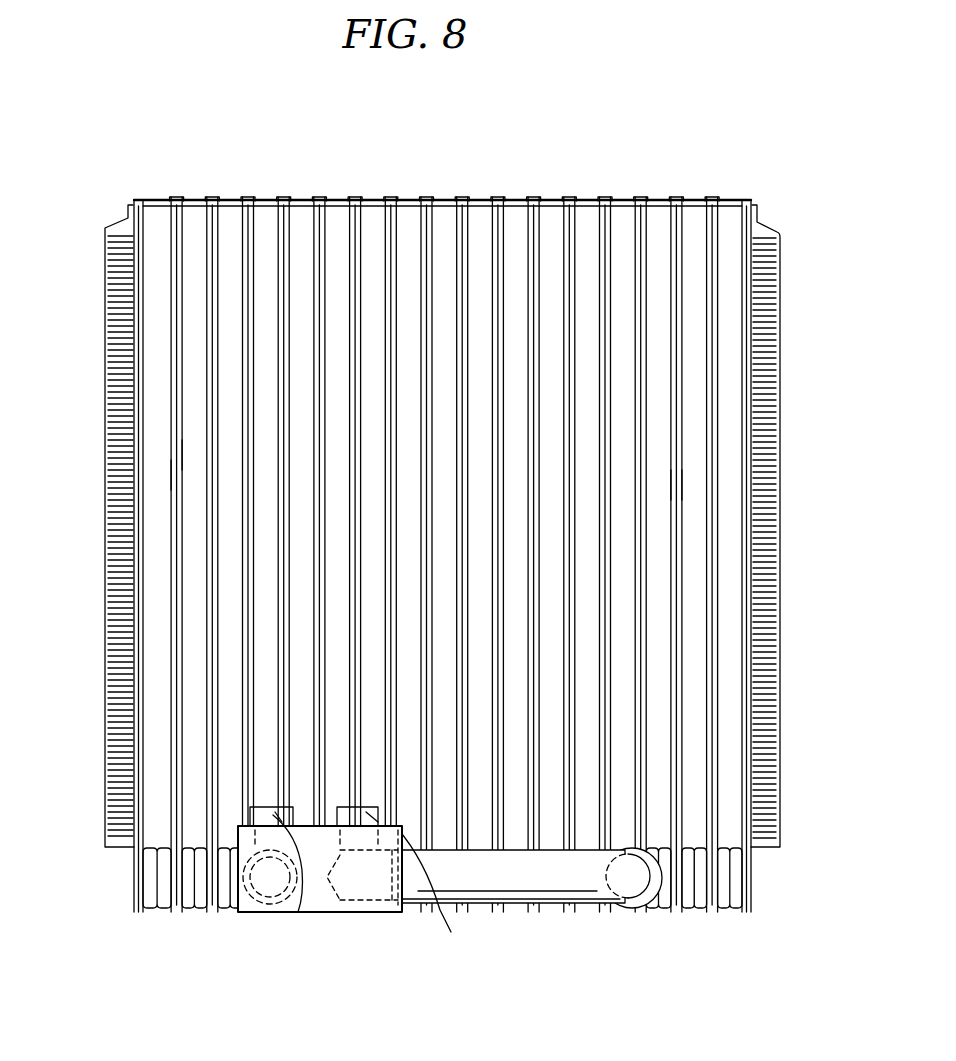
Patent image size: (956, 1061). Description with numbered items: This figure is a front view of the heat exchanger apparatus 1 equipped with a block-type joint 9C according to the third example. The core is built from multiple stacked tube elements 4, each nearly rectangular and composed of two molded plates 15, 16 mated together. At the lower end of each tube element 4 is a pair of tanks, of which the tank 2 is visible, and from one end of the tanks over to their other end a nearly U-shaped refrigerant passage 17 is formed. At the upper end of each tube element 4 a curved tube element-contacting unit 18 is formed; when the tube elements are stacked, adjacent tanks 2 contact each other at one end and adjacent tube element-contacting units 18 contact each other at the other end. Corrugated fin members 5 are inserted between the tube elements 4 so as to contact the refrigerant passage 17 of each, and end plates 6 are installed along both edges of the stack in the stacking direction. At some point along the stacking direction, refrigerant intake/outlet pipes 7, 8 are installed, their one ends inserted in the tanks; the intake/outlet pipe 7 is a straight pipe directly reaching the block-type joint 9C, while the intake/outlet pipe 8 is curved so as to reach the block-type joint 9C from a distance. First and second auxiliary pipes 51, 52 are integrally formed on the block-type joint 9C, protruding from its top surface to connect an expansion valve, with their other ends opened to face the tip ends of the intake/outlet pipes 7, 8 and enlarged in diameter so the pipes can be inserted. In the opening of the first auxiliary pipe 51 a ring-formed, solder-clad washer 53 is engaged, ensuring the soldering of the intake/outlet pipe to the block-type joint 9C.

The heat exchanger apparatus 1 is at (773, 197).
The tank 2 is at (190, 908).
The tube element 4 is at (168, 563).
The corrugated fin member 5 is at (125, 470).
The end plate 6 is at (104, 622).
The intake/outlet pipe 7 is at (262, 918).
The intake/outlet pipe 8 is at (610, 912).
The block-type joint 9C is at (327, 905).
The molded plate 15 is at (180, 456).
The molded plate 16 is at (170, 472).
The refrigerant passage 17 is at (178, 497).
The tube element-contacting unit 18 is at (165, 200).
The first auxiliary pipe 51 is at (298, 912).
The second auxiliary pipe 52 is at (460, 929).
The washer 53 is at (372, 816).